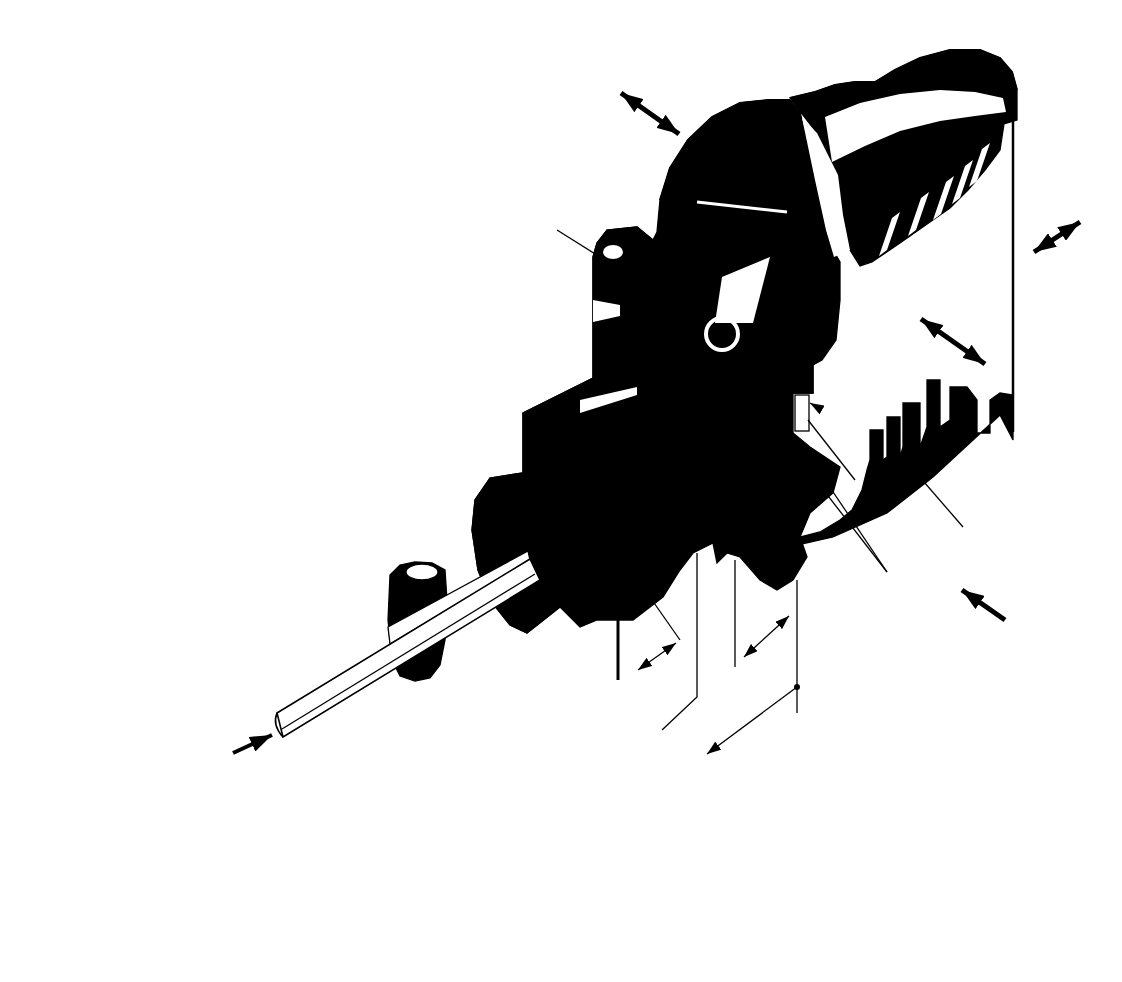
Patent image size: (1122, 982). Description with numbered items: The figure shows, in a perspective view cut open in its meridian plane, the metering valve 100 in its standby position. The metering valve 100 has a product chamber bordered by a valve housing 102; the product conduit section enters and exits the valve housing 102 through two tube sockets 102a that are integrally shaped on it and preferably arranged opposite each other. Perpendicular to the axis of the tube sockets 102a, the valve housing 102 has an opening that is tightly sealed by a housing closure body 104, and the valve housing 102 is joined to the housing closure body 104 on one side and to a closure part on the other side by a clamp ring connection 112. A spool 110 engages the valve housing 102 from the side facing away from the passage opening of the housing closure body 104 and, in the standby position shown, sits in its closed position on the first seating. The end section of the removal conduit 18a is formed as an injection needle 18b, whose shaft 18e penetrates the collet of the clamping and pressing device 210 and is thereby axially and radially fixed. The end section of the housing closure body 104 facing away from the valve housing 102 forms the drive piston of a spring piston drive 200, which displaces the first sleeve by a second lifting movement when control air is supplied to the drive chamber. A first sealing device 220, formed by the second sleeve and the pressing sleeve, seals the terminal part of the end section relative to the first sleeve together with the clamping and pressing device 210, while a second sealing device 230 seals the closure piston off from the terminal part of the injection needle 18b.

The metering valve 100 is at (372, 160).
The valve housing 102 is at (887, 130).
The tube socket 102a is at (697, 167).
The housing closure body 104 is at (817, 288).
The spool 110 is at (848, 262).
The clamp ring connection 112 is at (977, 90).
The removal conduit 18a is at (333, 677).
The injection needle 18b is at (806, 372).
The shaft of the injection needle 18e is at (510, 578).
The spring piston drive 200 is at (520, 410).
The clamping and pressing device 210 is at (473, 495).
The first sealing device 220 is at (572, 390).
The second sealing device 230 is at (593, 337).